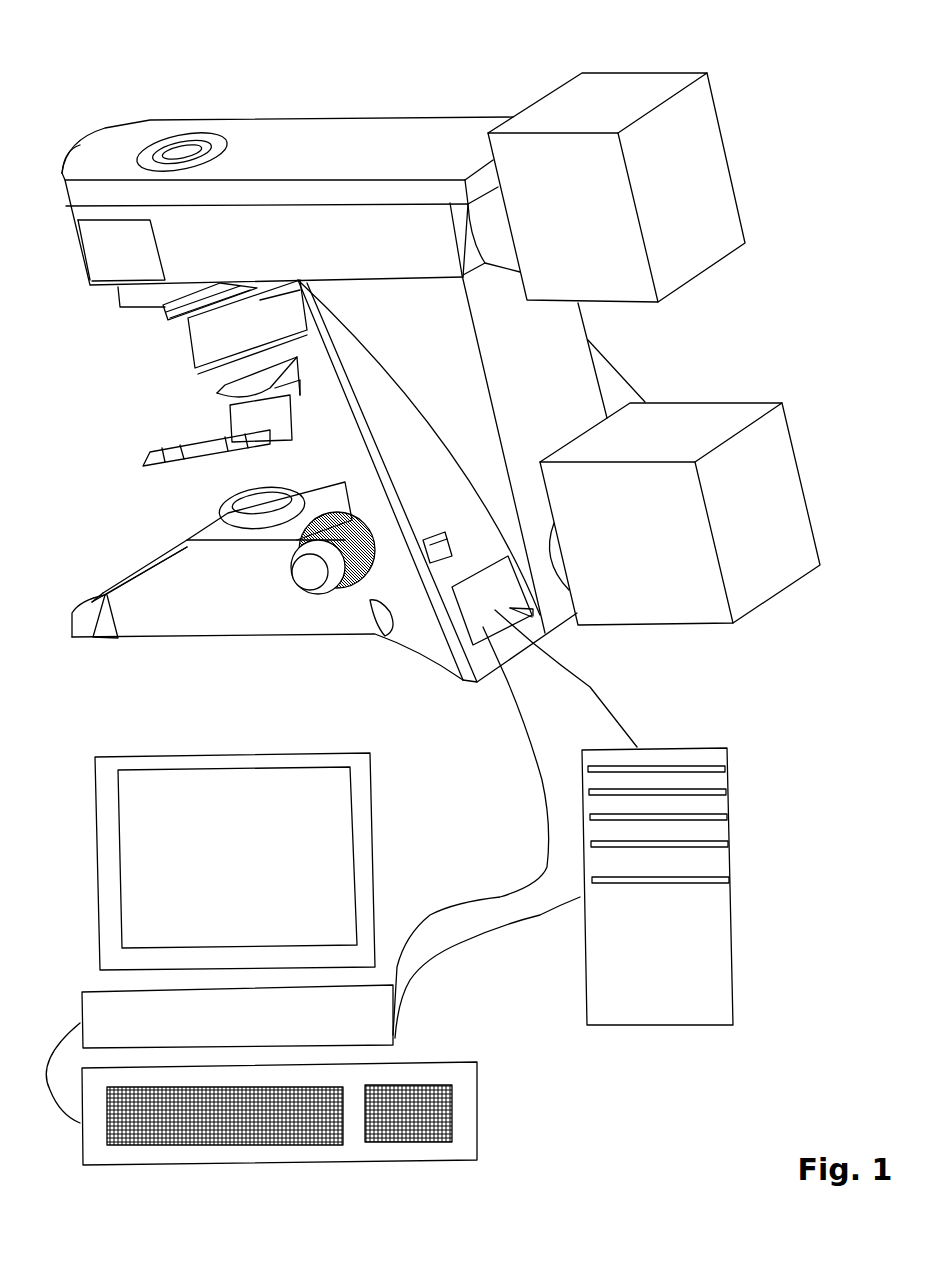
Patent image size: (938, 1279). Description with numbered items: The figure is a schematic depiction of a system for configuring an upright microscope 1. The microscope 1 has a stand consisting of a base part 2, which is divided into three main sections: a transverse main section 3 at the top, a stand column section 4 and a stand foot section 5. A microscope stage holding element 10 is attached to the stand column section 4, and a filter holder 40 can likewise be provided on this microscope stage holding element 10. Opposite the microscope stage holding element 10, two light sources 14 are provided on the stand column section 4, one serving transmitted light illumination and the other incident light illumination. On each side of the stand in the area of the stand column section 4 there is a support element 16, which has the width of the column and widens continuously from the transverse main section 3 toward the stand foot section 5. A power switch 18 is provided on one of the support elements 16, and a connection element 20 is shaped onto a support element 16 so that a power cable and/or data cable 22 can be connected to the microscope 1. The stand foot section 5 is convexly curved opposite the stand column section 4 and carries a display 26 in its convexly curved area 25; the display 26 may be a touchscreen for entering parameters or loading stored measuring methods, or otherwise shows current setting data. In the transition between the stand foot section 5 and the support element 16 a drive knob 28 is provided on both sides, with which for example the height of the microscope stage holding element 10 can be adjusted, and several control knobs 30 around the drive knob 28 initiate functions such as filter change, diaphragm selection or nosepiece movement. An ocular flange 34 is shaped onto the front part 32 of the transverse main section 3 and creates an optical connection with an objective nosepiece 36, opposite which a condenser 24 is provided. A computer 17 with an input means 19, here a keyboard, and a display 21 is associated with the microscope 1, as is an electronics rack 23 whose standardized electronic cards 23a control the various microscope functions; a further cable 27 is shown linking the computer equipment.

The microscope 1 is at (264, 90).
The base part 2 is at (543, 400).
The transverse main section 3 is at (332, 147).
The stand column section 4 is at (470, 328).
The stand foot section 5 is at (193, 615).
The microscope stage holding element 10 is at (222, 413).
The light source 14 is at (593, 83).
The support element 16 is at (380, 635).
The computer 17 is at (93, 998).
The power switch 18 is at (432, 537).
The input means 19 is at (485, 1108).
The connection element 20 is at (478, 580).
The display 21 is at (100, 756).
The data cable 22 is at (607, 708).
The electronics rack 23 is at (725, 915).
The electronic card 23a is at (723, 764).
The condenser 24 is at (222, 517).
The convexly curved area 25 is at (103, 596).
The display 26 is at (153, 560).
The cable 27 is at (543, 918).
The drive knob 28 is at (310, 575).
The control knob 30 is at (385, 640).
The front part 32 is at (77, 158).
The ocular flange 34 is at (197, 133).
The objective nosepiece 36 is at (197, 348).
The filter holder 40 is at (197, 437).